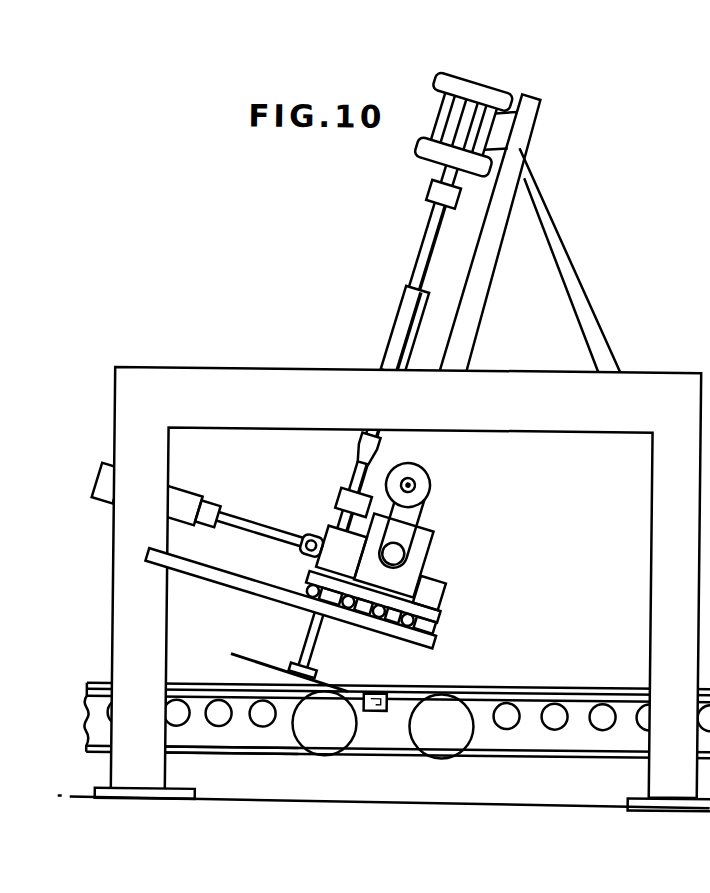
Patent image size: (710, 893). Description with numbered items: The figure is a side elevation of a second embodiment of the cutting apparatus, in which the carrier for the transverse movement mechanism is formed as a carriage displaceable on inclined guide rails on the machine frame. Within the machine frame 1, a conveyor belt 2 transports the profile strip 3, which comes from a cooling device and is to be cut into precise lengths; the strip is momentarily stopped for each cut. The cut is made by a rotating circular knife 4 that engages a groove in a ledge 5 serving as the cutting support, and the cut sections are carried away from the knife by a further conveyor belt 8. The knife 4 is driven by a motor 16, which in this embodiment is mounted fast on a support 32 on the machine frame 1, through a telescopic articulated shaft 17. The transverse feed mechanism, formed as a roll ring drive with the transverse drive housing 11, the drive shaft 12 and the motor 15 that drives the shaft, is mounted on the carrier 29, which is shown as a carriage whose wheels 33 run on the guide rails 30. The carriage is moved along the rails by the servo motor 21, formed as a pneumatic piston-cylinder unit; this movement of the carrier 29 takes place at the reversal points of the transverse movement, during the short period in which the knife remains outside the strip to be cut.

The machine frame 1 is at (208, 377).
The conveyor belt 2 is at (550, 755).
The profile strip 3 is at (536, 689).
The rotating circular knife 4 is at (244, 647).
The ledge 5 is at (376, 712).
The conveyor belt 8 is at (235, 754).
The transverse drive housing 11 is at (413, 537).
The drive shaft 12 is at (395, 555).
The motor 15 is at (416, 468).
The motor 16 is at (450, 69).
The articulated shaft 17 is at (396, 333).
The servo motor 21 is at (187, 499).
The carrier 29 is at (413, 602).
The guide rails 30 is at (429, 633).
The support 32 is at (570, 298).
The wheels 33 is at (305, 603).